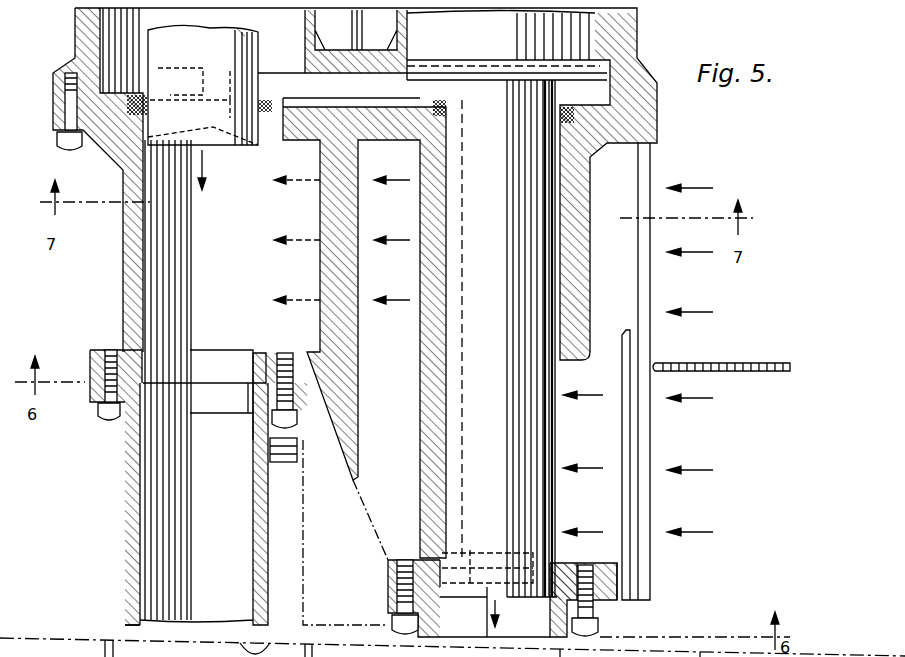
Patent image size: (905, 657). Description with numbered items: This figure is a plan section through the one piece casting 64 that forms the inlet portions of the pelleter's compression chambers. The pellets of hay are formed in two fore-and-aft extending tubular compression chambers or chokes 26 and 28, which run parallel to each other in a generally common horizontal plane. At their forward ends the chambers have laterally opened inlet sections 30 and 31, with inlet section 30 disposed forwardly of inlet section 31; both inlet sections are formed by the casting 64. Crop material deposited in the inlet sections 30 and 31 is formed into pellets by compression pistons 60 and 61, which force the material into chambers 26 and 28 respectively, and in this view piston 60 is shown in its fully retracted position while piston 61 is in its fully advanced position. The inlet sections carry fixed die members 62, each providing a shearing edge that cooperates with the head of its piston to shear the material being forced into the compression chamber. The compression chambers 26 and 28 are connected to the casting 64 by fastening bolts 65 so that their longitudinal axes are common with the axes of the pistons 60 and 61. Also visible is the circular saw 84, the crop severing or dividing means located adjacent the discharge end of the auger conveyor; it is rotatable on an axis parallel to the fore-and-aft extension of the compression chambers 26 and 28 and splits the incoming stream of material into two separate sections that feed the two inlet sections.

The compression chamber 26 is at (125, 540).
The compression chamber 28 is at (420, 484).
The inlet section 30 is at (200, 273).
The inlet section 31 is at (612, 508).
The compression piston 60 is at (257, 44).
The compression piston 61 is at (545, 438).
The fixed die member 62 is at (256, 368).
The one piece casting 64 is at (350, 384).
The fastening bolt 65 is at (100, 412).
The circular saw 84 is at (756, 362).